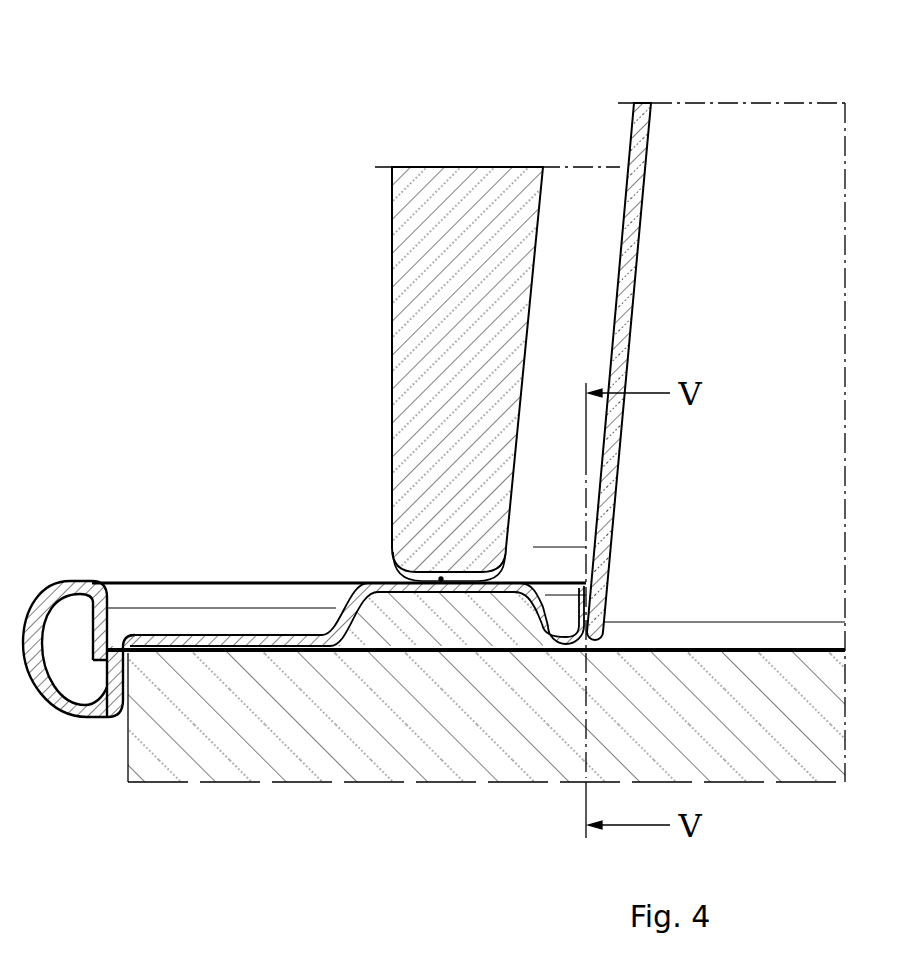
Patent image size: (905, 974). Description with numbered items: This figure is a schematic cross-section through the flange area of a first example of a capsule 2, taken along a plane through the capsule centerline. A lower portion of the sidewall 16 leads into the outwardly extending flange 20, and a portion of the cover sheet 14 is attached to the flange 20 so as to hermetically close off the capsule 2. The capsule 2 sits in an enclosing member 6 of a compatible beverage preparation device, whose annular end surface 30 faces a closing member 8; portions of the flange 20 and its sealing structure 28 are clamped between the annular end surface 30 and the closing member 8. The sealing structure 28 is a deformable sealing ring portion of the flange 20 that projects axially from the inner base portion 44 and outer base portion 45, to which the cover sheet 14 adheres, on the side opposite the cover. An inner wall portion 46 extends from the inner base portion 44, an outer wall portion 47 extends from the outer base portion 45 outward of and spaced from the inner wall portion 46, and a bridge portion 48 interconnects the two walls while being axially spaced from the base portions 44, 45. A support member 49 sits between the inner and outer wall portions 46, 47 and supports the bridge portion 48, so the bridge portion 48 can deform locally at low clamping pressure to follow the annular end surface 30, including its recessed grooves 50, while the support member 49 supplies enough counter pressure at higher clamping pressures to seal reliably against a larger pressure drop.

The capsule 2 is at (631, 141).
The enclosing member 6 is at (392, 218).
The closing member 8 is at (215, 717).
The cover sheet 14 is at (722, 650).
The sidewall 16 is at (625, 285).
The flange 20 is at (157, 628).
The sealing structure 28 is at (413, 654).
The annular end surface 30 is at (360, 498).
The inner base portion 44 is at (573, 640).
The outer base portion 45 is at (192, 640).
The inner wall portion 46 is at (608, 600).
The outer wall portion 47 is at (345, 623).
The bridge portion 48 is at (509, 585).
The support member 49 is at (392, 613).
The grooves 50 is at (420, 800).